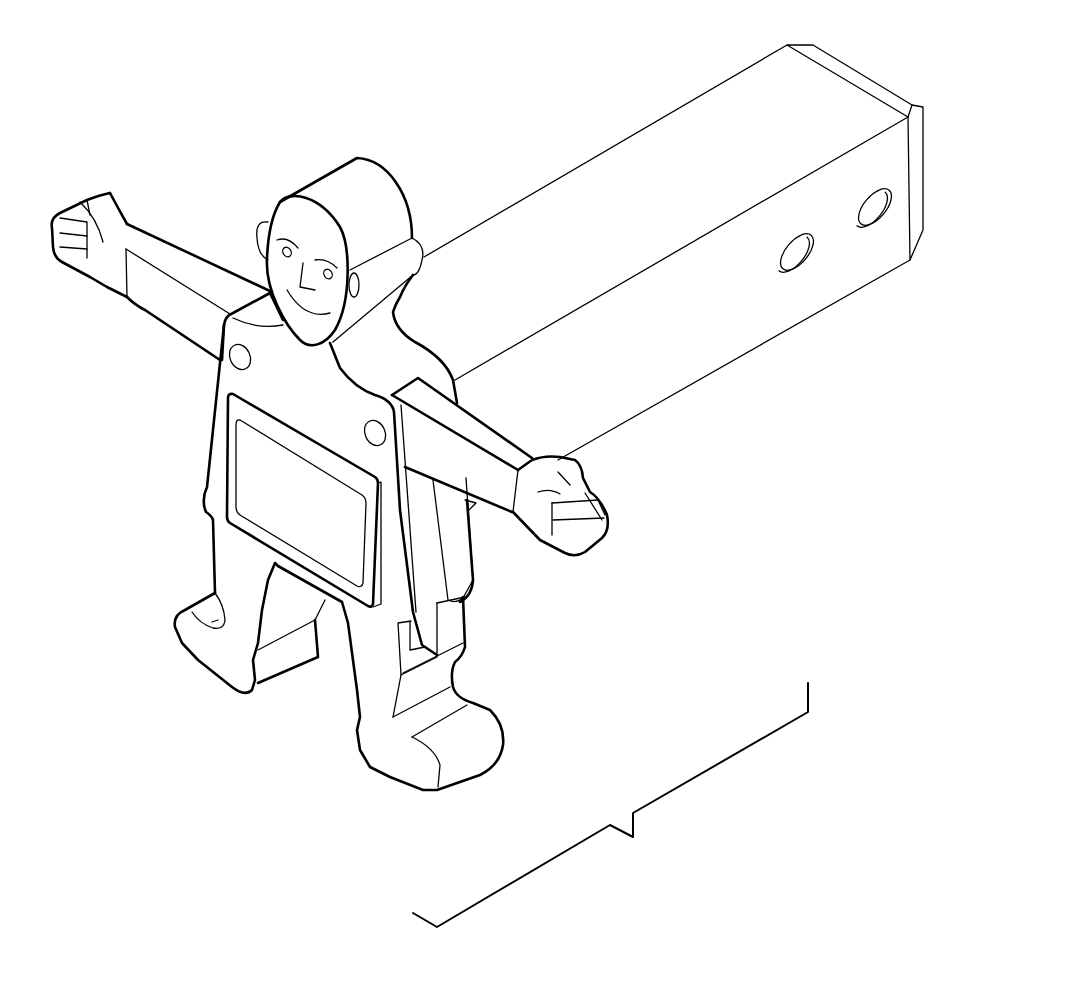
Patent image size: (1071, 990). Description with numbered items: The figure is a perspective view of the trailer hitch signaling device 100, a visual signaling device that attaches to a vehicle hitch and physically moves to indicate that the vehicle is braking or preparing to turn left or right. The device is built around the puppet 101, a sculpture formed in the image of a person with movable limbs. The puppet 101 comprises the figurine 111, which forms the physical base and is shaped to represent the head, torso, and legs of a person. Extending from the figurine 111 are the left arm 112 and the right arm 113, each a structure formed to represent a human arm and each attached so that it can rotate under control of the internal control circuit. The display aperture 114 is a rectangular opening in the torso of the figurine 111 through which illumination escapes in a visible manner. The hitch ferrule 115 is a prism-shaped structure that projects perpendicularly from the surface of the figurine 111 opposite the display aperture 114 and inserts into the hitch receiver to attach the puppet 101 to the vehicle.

The trailer hitch signaling device 100 is at (187, 104).
The puppet 101 is at (280, 180).
The figurine 111 is at (383, 190).
The left arm 112 is at (508, 513).
The right arm 113 is at (140, 268).
The display aperture 114 is at (253, 460).
The hitch ferrule 115 is at (624, 158).